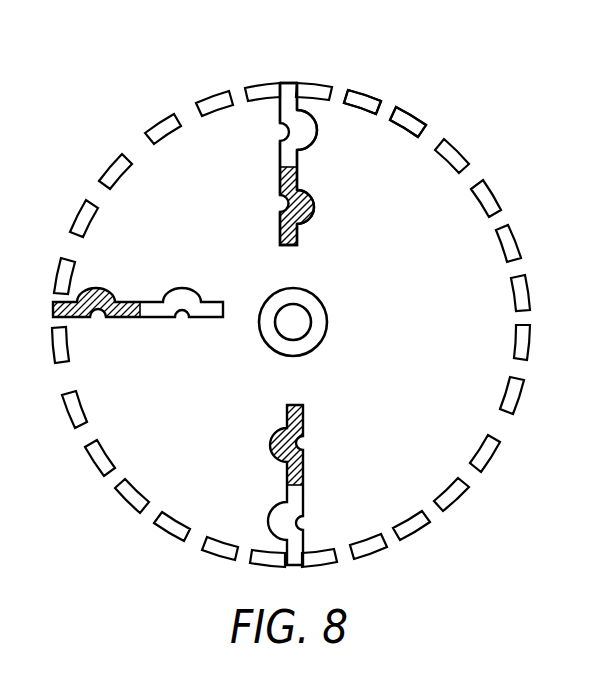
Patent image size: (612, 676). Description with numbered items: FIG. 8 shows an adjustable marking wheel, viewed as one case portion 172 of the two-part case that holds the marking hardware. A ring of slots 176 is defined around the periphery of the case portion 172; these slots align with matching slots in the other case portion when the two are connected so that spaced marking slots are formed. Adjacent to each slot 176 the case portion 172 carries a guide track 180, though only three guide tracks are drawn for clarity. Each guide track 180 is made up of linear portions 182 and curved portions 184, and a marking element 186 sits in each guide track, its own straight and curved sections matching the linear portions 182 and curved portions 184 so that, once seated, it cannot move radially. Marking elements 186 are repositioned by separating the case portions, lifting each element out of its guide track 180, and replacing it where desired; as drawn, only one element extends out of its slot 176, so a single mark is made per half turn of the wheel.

The case portion 172 is at (341, 76).
The slot 176 is at (383, 108).
The guide track 180 is at (263, 176).
The linear portion 182 is at (281, 108).
The curved portion 184 is at (316, 127).
The marking element 186 is at (112, 318).